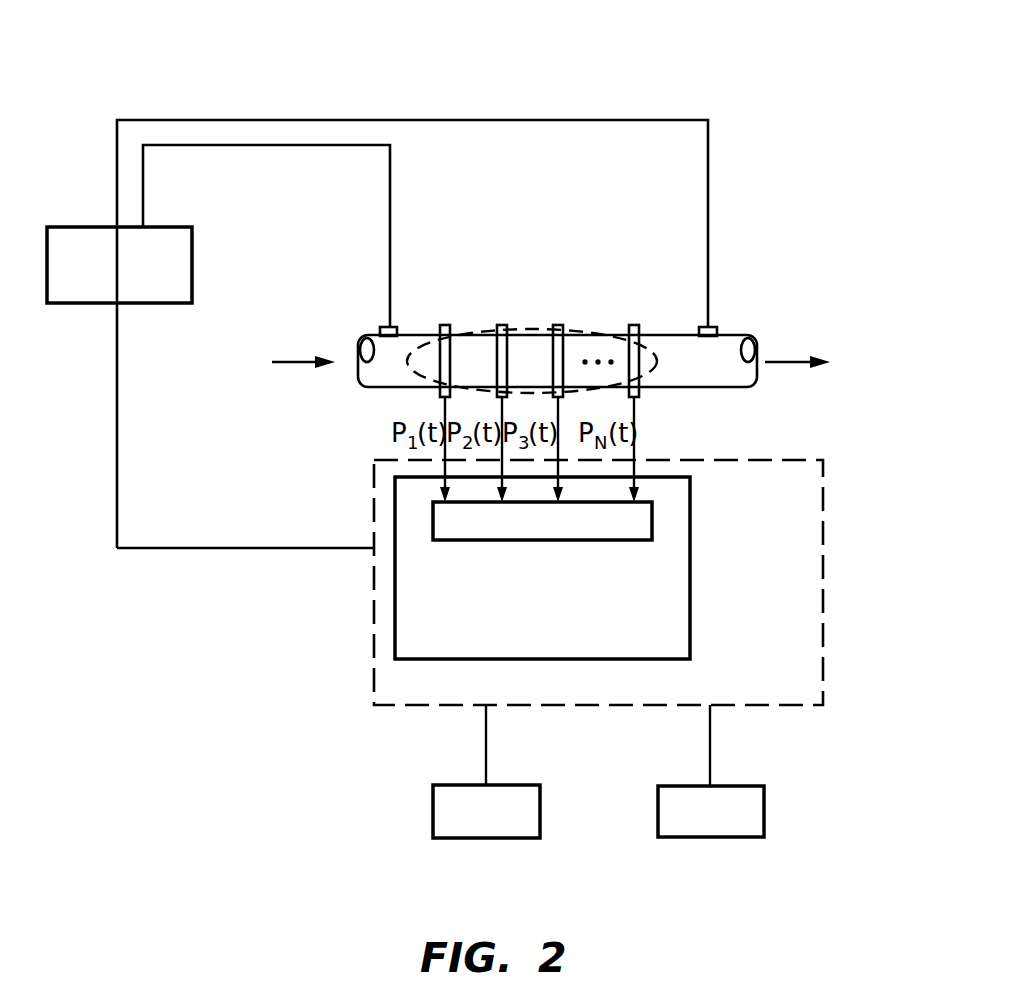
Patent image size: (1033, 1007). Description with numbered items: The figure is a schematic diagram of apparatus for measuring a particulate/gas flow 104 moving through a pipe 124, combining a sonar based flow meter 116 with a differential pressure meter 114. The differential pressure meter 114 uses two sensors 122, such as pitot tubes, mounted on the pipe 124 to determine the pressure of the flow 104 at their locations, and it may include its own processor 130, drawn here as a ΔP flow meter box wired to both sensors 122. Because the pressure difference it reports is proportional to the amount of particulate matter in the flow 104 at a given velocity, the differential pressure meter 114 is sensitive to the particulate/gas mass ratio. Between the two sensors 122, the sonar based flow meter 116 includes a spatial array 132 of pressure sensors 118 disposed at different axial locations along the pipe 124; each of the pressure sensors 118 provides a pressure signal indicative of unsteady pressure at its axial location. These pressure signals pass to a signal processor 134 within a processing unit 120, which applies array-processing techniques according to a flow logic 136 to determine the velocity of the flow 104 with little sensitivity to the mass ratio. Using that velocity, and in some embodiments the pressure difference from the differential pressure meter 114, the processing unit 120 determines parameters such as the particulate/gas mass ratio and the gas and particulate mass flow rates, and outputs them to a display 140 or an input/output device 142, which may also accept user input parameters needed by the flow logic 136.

The particulate/gas flow 104 is at (305, 363).
The differential pressure meter 114 is at (450, 97).
The sonar based flow meter 116 is at (538, 228).
The pressure sensors 118 is at (440, 333).
The processing unit 120 is at (823, 657).
The sensors 122 is at (380, 330).
The pipe 124 is at (730, 335).
The processor 130 is at (192, 258).
The spatial array 132 is at (662, 355).
The signal processor 134 is at (690, 637).
The flow logic 136 is at (652, 520).
The display 140 is at (433, 812).
The input/output device 142 is at (764, 812).